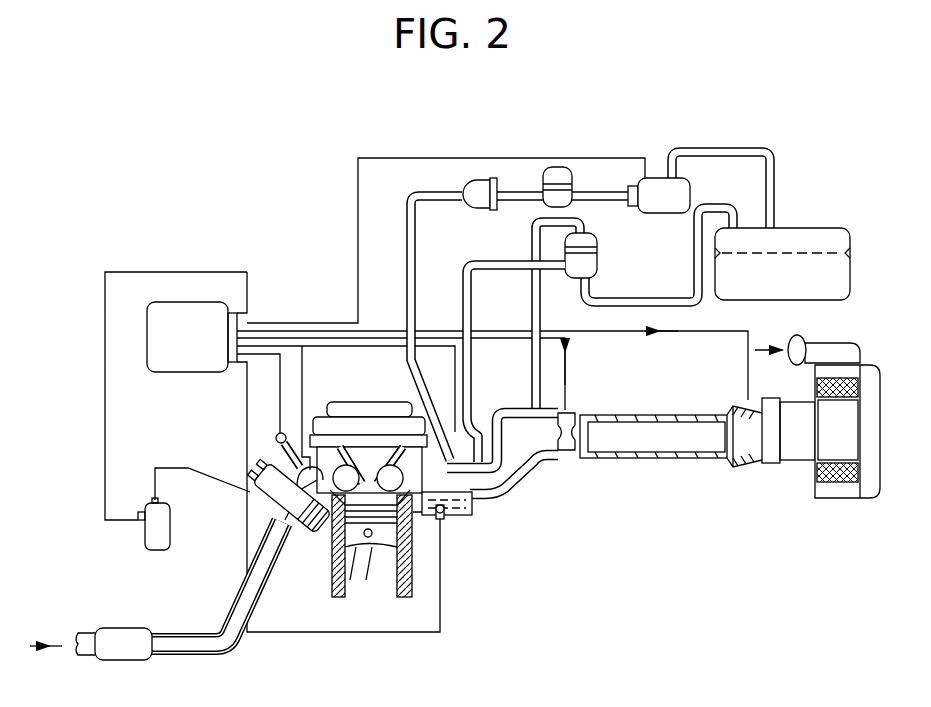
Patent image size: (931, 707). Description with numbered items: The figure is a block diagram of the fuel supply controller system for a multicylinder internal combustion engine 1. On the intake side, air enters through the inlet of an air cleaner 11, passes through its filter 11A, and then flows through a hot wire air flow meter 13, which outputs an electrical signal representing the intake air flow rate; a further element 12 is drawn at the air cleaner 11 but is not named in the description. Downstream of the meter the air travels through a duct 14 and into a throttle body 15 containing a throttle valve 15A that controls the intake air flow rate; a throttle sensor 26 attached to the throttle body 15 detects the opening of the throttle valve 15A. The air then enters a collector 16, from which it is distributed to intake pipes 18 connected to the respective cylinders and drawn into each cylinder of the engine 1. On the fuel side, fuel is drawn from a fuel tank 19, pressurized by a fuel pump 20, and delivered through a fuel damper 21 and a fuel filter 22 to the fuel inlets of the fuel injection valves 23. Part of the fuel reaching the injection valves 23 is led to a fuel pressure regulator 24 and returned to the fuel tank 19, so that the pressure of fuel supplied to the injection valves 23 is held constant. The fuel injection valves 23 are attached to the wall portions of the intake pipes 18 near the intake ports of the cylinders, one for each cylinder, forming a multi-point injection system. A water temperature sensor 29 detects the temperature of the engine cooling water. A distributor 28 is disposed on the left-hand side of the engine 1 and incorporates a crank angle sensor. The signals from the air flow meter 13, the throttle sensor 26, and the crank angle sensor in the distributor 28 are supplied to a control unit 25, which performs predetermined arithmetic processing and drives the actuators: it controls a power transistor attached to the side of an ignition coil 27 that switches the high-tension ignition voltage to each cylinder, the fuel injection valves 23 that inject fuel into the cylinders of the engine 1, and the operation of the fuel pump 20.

The multicylinder internal combustion engine 1 is at (331, 574).
The air cleaner 11 is at (828, 460).
The filter 11A is at (818, 473).
The intake air temperature sensor 12 is at (805, 345).
The hot wire air flow meter 13 is at (748, 460).
The duct 14 is at (675, 460).
The throttle body 15 is at (551, 456).
The throttle valve 15A is at (572, 450).
The collector 16 is at (520, 453).
The intake pipes 18 is at (490, 483).
The fuel tank 19 is at (805, 228).
The fuel pump 20 is at (660, 178).
The fuel damper 21 is at (558, 167).
The fuel filter 22 is at (478, 178).
The fuel injection valves 23 is at (478, 418).
The fuel pressure regulator 24 is at (598, 254).
The control unit 25 is at (183, 372).
The throttle sensor 26 is at (568, 413).
The ignition coil 27 is at (140, 550).
The distributor 28 is at (247, 508).
The water temperature sensor 29 is at (443, 518).